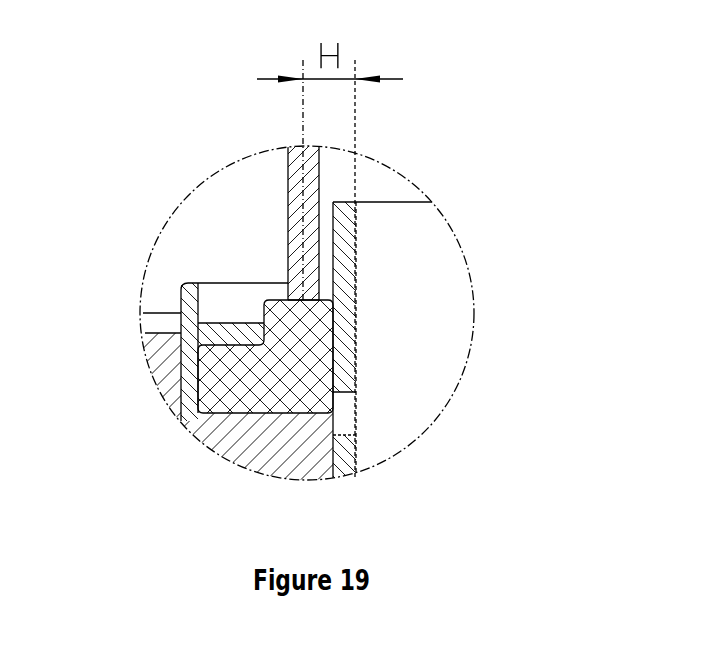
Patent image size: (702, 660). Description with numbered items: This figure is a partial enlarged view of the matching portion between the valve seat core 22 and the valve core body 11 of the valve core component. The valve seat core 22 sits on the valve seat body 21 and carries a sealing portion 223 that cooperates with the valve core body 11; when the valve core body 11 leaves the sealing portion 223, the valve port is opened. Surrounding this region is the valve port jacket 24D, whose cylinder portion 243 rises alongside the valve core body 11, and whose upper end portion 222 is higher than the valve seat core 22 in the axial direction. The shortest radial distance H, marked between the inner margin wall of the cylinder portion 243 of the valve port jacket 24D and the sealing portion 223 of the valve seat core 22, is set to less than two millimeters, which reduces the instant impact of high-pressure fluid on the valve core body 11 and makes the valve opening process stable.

The valve core body 11 is at (248, 201).
The valve seat body 21 is at (227, 420).
The valve seat core 22 is at (173, 323).
The upper end portion 222 is at (221, 277).
The sealing portion 223 is at (419, 237).
The cylinder portion 243 is at (440, 343).
The valve port jacket 24D is at (438, 422).